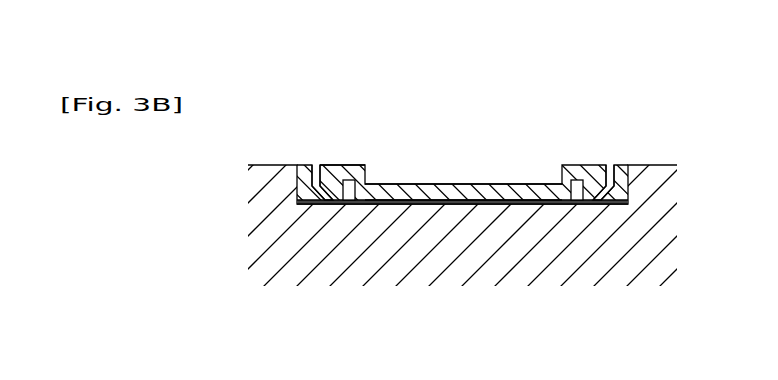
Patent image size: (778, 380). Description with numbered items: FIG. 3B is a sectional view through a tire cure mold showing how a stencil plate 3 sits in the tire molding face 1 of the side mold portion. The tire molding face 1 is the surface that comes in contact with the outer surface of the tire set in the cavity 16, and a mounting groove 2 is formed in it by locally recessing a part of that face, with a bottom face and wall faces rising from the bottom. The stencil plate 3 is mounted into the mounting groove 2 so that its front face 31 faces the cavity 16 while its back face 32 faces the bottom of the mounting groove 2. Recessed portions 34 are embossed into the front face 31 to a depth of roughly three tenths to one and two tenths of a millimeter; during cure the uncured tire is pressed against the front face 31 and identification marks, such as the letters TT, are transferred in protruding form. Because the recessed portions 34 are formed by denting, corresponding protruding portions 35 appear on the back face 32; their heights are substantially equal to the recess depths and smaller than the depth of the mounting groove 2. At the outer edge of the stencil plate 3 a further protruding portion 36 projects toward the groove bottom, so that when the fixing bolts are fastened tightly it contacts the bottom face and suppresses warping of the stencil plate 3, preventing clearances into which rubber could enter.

The cavity 16 is at (427, 62).
The tire molding face 1 is at (272, 164).
The mounting groove 2 is at (402, 204).
The stencil plate 3 is at (532, 158).
The front face 31 is at (340, 165).
The back face 32 is at (338, 205).
The recessed portions 34 is at (412, 185).
The protruding portions 35 is at (493, 205).
The protruding portion 36 is at (317, 204).